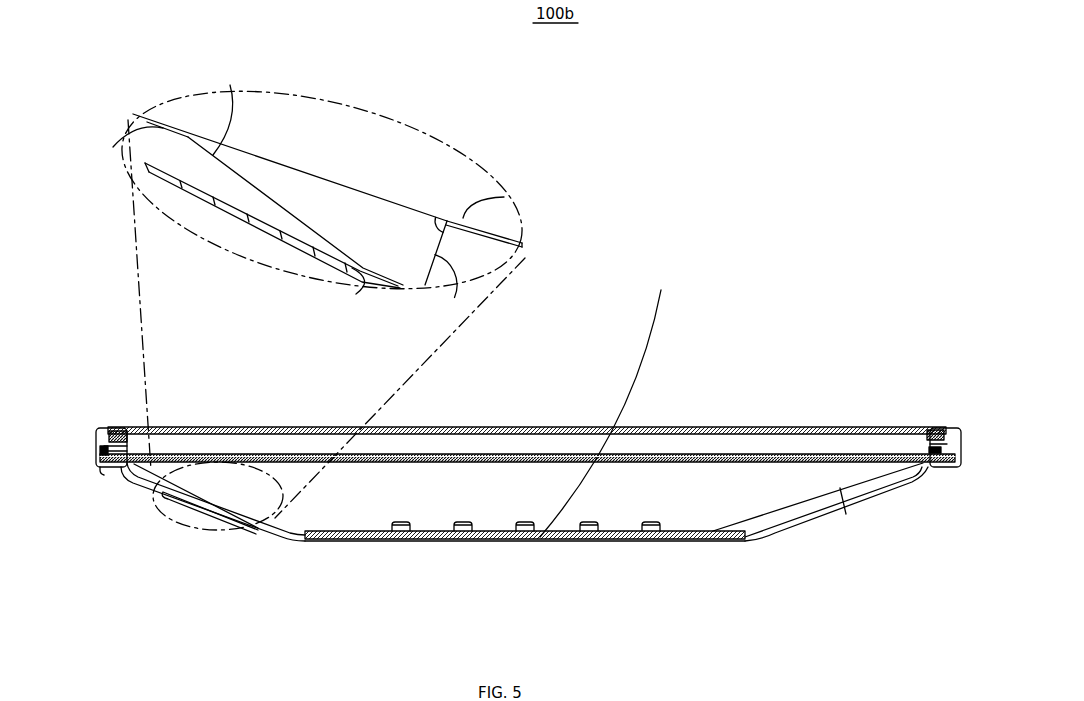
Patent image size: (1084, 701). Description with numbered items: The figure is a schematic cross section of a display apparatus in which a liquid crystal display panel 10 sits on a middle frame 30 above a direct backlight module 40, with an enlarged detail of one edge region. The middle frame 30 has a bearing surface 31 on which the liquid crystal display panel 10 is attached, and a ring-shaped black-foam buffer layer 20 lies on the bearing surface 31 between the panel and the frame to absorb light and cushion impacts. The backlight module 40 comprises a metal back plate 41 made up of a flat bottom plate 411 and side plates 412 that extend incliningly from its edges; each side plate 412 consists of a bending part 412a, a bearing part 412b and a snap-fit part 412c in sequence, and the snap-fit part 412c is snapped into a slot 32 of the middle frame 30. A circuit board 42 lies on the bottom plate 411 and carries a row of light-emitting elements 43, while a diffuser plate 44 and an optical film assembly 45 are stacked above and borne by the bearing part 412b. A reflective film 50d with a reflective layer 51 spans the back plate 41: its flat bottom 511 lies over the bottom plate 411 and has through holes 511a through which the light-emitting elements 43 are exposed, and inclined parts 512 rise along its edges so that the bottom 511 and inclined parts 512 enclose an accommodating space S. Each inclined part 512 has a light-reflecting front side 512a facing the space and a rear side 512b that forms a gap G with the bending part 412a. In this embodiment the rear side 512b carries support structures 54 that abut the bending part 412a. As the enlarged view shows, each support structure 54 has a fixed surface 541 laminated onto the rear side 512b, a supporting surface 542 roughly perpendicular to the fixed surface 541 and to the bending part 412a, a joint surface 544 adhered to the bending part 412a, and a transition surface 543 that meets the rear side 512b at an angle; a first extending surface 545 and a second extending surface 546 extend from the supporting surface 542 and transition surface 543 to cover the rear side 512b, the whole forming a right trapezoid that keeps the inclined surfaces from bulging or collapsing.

The liquid crystal display panel 10 is at (158, 430).
The buffer layer 20 is at (118, 432).
The middle frame 30 is at (97, 436).
The bearing surface 31 is at (111, 430).
The slot 32 is at (100, 450).
The backlight module 40 is at (488, 550).
The back plate 41 is at (397, 550).
The bottom plate 411 is at (510, 567).
The side plate 412 is at (177, 528).
The bending part 412a is at (196, 508).
The bearing part 412b is at (122, 474).
The snap-fit part 412c is at (107, 473).
The circuit board 42 is at (366, 539).
The light-emitting element 43 is at (467, 533).
The diffuser plate 44 is at (485, 456).
The optical film assembly 45 is at (530, 456).
The reflective film 50d is at (788, 519).
The reflective layer 51 is at (695, 232).
The bottom 511 is at (607, 402).
The through hole 511a is at (414, 528).
The inclined part 512 is at (560, 243).
The front side 512a is at (524, 241).
The rear side 512b is at (524, 247).
The support structure 54 is at (332, 214).
The fixed surface 541 is at (336, 181).
The supporting surface 542 is at (437, 271).
The transition surface 543 is at (267, 197).
The joint surface 544 is at (356, 295).
The first extending surface 545 is at (503, 202).
The second extending surface 546 is at (132, 117).
The gap G is at (314, 535).
The accommodating space S is at (705, 470).